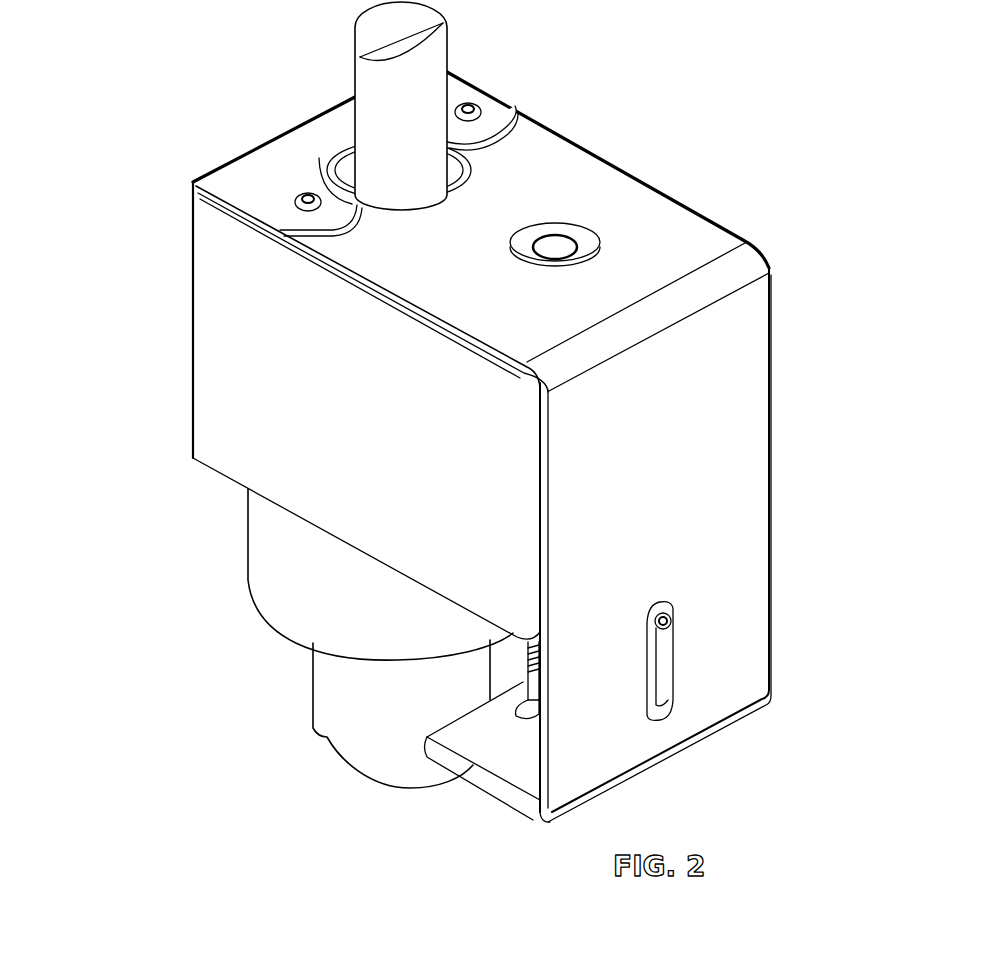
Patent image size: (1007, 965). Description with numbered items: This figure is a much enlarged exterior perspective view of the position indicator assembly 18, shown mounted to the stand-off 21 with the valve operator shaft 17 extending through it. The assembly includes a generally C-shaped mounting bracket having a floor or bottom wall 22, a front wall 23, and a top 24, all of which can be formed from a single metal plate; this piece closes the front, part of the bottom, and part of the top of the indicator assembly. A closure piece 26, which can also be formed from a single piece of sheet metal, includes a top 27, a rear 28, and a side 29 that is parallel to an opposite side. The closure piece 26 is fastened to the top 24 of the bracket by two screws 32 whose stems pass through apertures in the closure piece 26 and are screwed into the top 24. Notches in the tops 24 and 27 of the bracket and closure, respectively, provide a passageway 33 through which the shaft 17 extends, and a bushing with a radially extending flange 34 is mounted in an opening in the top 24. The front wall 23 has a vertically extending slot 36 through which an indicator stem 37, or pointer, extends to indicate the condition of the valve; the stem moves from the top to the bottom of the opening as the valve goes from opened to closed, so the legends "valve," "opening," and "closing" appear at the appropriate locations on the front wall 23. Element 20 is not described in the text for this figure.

The shaft 17 is at (410, 88).
The position indicator assembly 18 is at (748, 182).
The upper body 20 is at (288, 538).
The stand-off 21 is at (350, 717).
The bottom wall 22 is at (503, 753).
The front wall 23 is at (735, 440).
The top 24 is at (623, 200).
The closure piece 26 is at (242, 130).
The top 27 is at (318, 133).
The rear 28 is at (193, 228).
The side 29 is at (257, 328).
The screws 32 is at (296, 197).
The passageway 33 is at (460, 172).
The bushing flange 34 is at (596, 245).
The slot 36 is at (659, 667).
The indicator stem 37 is at (675, 620).